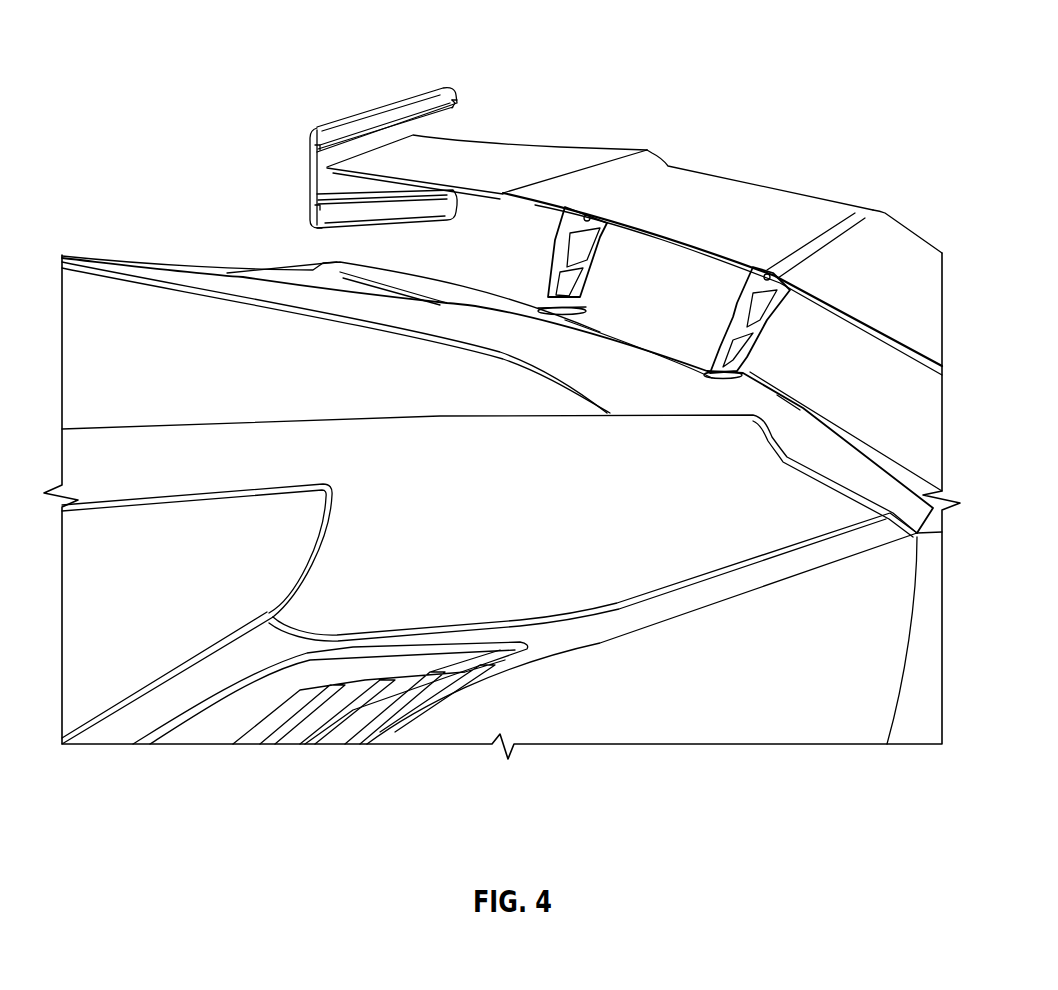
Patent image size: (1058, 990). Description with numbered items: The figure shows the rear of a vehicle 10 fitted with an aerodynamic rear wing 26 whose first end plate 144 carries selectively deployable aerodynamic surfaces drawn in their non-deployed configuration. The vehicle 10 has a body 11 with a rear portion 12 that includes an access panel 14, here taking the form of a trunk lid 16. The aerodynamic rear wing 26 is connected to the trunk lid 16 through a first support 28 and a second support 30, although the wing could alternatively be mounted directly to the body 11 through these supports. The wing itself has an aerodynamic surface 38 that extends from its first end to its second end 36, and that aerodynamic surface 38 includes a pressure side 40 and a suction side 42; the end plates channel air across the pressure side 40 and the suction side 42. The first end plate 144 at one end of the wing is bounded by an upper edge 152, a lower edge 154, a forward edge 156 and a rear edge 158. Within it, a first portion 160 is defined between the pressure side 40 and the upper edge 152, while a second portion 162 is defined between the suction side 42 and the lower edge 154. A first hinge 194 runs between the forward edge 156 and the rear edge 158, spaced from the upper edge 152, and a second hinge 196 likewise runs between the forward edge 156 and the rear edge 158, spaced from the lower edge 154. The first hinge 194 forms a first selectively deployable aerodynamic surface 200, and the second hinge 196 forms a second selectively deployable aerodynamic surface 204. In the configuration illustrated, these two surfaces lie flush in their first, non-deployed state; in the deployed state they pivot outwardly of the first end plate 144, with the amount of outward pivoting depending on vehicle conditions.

The vehicle 10 is at (559, 190).
The body 11 is at (575, 710).
The rear portion 12 is at (777, 664).
The access panel 14 is at (487, 330).
The trunk lid 16 is at (590, 380).
The aerodynamic rear wing 26 is at (634, 220).
The first support 28 is at (587, 267).
The second support 30 is at (743, 303).
The second end 36 is at (853, 272).
The aerodynamic surface 38 is at (590, 162).
The pressure side 40 is at (787, 222).
The suction side 42 is at (713, 256).
The first end plate 144 is at (378, 145).
The upper edge 152 is at (425, 84).
The lower edge 154 is at (386, 231).
The forward edge 156 is at (313, 160).
The rear edge 158 is at (457, 136).
The first portion 160 is at (458, 105).
The second portion 162 is at (327, 193).
The first hinge 194 is at (390, 127).
The second hinge 196 is at (353, 207).
The first selectively deployable aerodynamic surface 200 is at (343, 133).
The second selectively deployable aerodynamic surface 204 is at (397, 207).